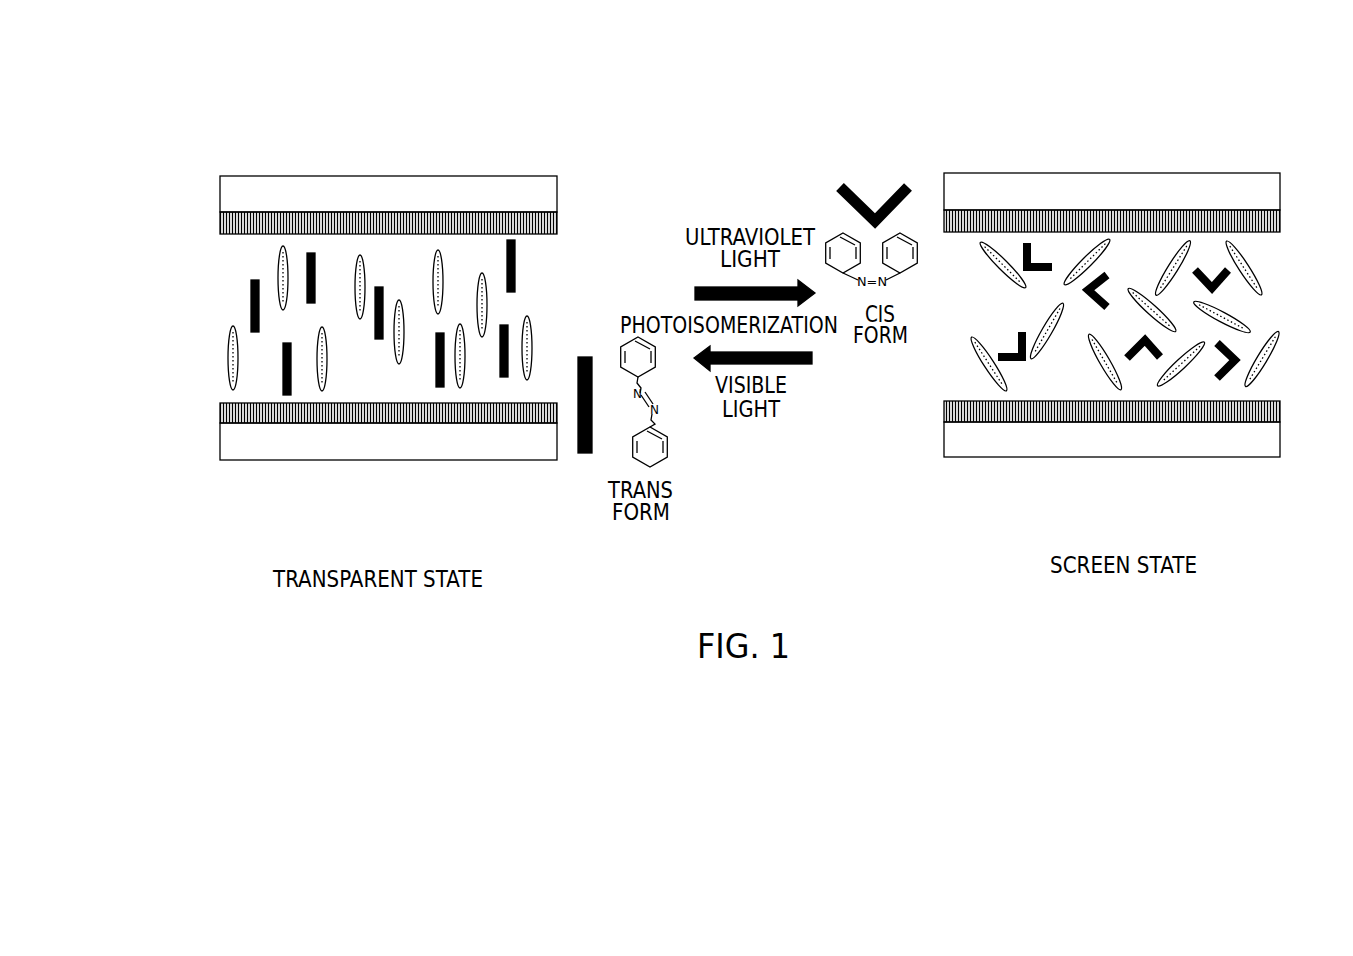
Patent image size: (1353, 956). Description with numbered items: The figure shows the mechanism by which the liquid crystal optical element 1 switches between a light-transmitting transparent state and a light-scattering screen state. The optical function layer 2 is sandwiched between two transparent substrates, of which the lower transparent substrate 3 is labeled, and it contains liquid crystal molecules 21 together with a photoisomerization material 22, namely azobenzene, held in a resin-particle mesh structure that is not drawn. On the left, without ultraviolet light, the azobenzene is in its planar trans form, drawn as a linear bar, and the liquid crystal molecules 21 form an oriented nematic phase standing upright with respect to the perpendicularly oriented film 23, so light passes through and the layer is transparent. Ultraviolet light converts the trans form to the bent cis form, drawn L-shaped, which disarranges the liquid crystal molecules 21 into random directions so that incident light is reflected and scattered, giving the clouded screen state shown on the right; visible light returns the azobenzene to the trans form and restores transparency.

The liquid crystal optical element 1 is at (163, 102).
The optical function layer 2 is at (151, 217).
The transparent substrate 3 is at (222, 445).
The liquid crystal molecule 21 is at (228, 358).
The photoisomerization material 22 is at (251, 303).
The perpendicularly oriented film 23 is at (222, 228).